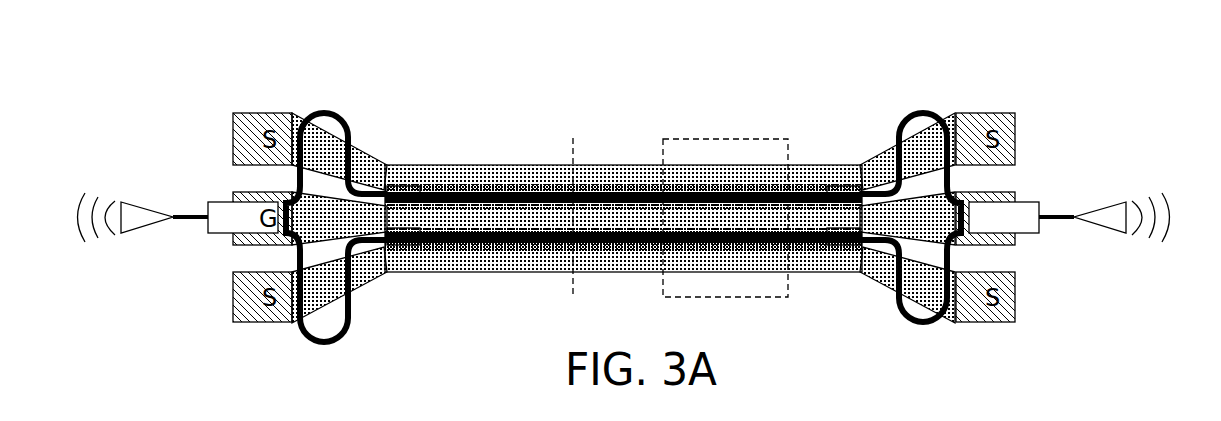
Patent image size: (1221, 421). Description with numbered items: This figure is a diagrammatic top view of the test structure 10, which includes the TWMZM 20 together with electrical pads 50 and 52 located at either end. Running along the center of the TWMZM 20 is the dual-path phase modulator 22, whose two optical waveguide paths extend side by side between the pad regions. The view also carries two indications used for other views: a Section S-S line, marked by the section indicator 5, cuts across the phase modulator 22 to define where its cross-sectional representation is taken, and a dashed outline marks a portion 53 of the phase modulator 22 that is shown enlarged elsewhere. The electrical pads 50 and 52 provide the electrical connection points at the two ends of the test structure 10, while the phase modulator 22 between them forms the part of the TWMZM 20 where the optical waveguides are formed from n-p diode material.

The test structure 10 is at (552, 103).
The TWMZM 20 is at (603, 143).
The phase modulator 22 is at (642, 162).
The electrical pad 50 is at (380, 133).
The electrical pad 52 is at (863, 135).
The portion of the phase modulator 53 is at (742, 139).
The cross-section line 5 is at (573, 140).